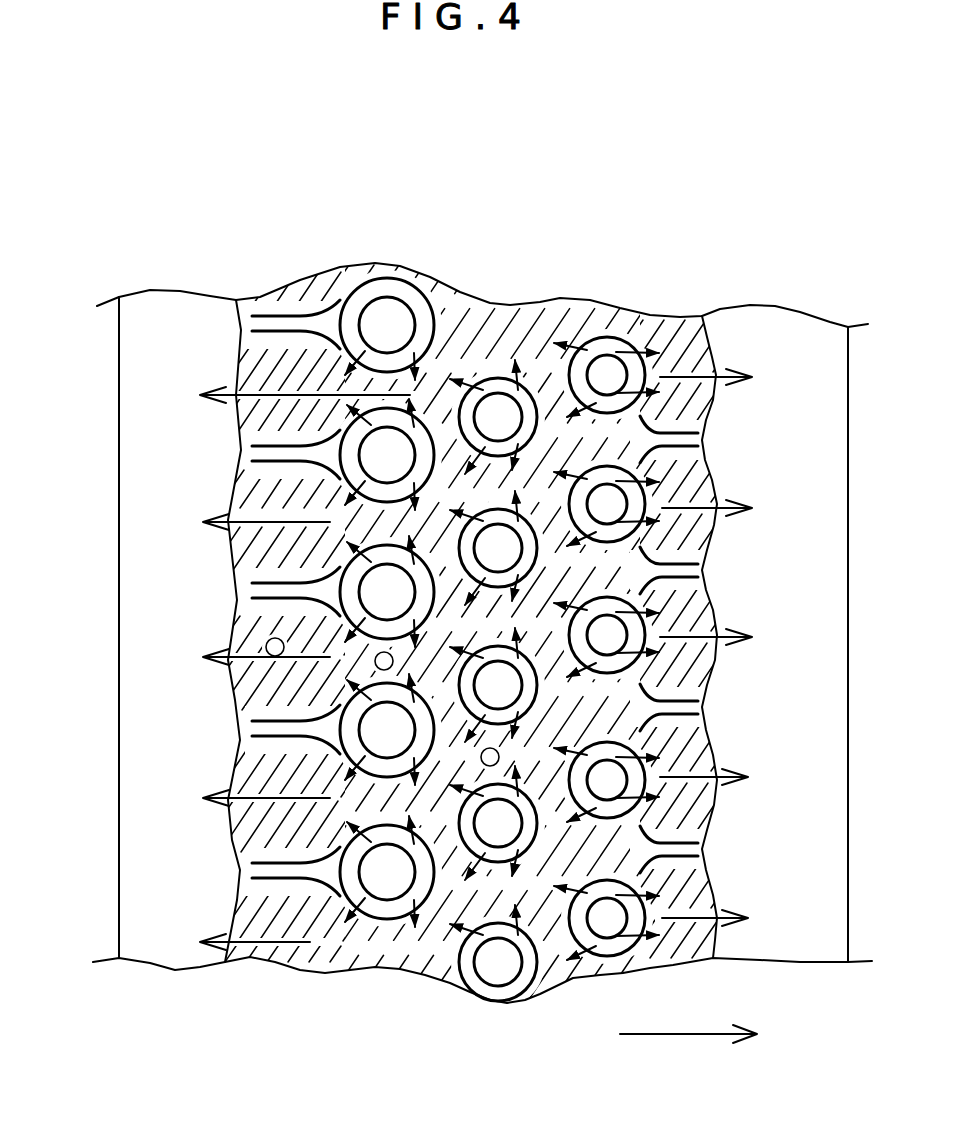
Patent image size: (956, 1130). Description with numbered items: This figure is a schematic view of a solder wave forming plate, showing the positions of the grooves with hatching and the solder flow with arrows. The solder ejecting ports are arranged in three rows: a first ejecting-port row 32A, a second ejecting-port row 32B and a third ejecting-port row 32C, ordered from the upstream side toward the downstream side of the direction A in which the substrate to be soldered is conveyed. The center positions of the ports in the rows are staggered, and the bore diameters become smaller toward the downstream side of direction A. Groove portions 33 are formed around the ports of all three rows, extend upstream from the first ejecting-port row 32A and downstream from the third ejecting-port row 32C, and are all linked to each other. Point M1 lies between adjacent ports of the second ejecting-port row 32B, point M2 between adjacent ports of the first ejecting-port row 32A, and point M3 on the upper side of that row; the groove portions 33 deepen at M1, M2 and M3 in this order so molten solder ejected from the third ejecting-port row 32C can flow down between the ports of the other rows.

The first ejecting-port row 32A is at (398, 318).
The second ejecting-port row 32B is at (505, 410).
The third ejecting-port row 32C is at (605, 372).
The groove portion 33 is at (383, 395).
The point between adjacent solder ejecting ports in the second ejecting-port row M1 is at (481, 759).
The point between adjacent solder ejecting ports in the first ejecting-port row M2 is at (376, 654).
The point on the upper side relative to the first ejecting-port row M3 is at (265, 645).
The direction in which the substrate subject to soldering is conveyed A is at (697, 1036).